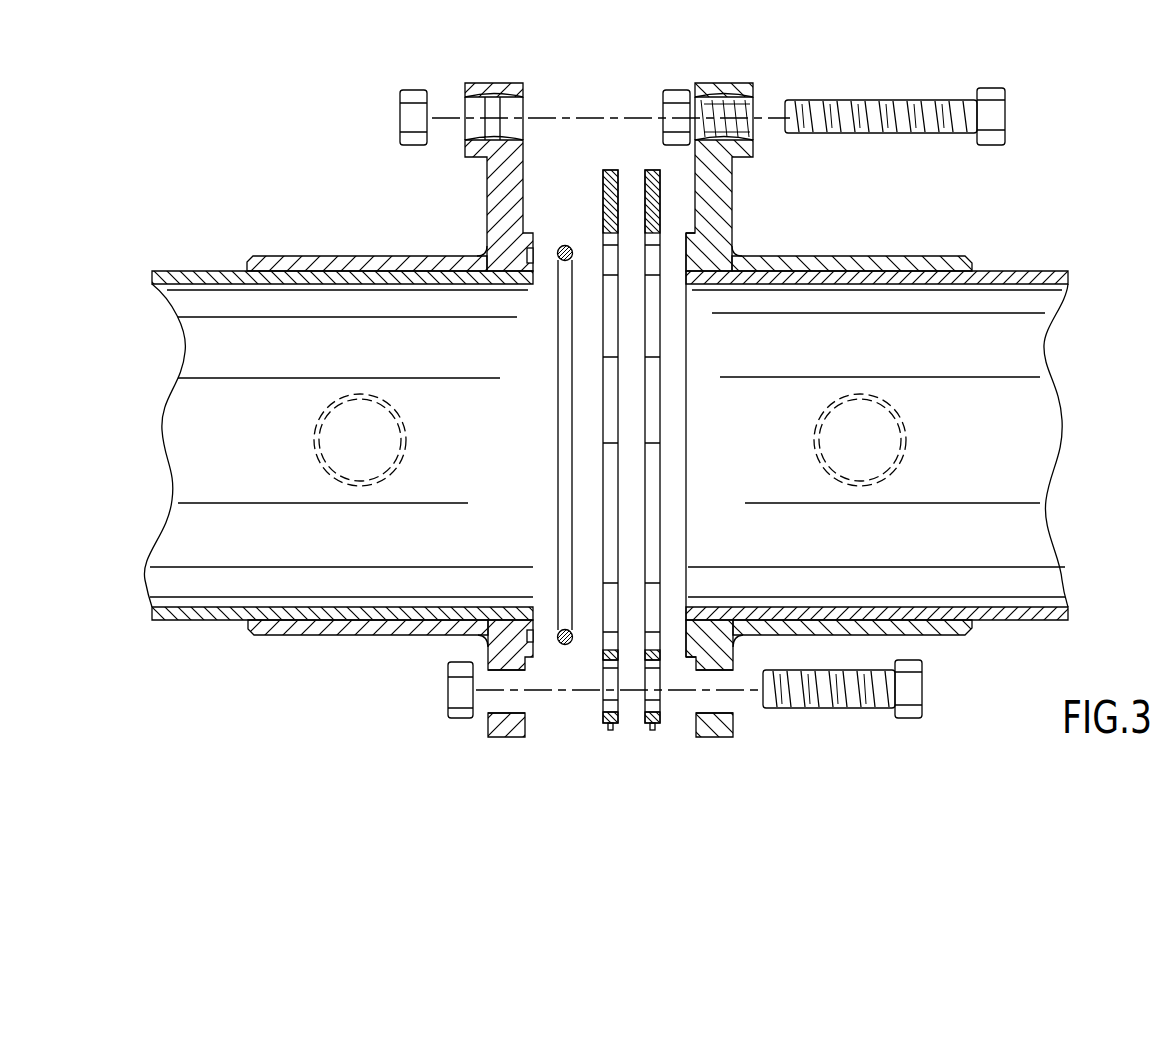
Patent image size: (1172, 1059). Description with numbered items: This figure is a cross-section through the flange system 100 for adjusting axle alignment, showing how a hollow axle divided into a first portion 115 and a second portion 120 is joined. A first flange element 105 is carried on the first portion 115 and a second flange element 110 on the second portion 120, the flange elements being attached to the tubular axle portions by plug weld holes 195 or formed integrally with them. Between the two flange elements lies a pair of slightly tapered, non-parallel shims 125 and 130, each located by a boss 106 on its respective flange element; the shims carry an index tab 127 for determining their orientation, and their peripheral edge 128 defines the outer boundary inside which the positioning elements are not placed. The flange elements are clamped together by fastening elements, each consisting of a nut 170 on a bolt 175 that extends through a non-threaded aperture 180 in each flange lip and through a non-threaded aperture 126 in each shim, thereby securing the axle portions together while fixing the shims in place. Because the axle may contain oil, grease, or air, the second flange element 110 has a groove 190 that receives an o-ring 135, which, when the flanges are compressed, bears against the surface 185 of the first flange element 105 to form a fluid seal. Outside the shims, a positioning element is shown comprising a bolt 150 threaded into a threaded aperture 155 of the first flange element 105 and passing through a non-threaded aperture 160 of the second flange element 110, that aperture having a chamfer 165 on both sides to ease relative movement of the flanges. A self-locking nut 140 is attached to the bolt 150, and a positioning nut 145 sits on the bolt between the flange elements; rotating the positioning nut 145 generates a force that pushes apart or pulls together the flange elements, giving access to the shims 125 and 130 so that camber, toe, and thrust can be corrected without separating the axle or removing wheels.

The flange system 100 is at (548, 62).
The first flange element 105 is at (932, 254).
The boss 106 is at (529, 232).
The second flange element 110 is at (297, 254).
The first portion 115 is at (1033, 268).
The second portion 120 is at (200, 625).
The shim 125 is at (620, 430).
The non-threaded aperture 126 is at (605, 703).
The index tab 127 is at (653, 724).
The peripheral edge 128 is at (545, 399).
The shim 130 is at (611, 345).
The o-ring 135 is at (565, 468).
The self-locking nut 140 is at (400, 112).
The positioning nut 145 is at (680, 92).
The bolt 150 is at (997, 115).
The threaded aperture 155 is at (760, 390).
The non-threaded aperture 160 is at (599, 399).
The chamfer 165 is at (477, 131).
The nut 170 is at (452, 697).
The bolt 175 is at (915, 690).
The non-threaded aperture 180 is at (527, 703).
The surface 185 is at (684, 262).
The groove 190 is at (541, 626).
The plug weld hole 195 is at (350, 440).